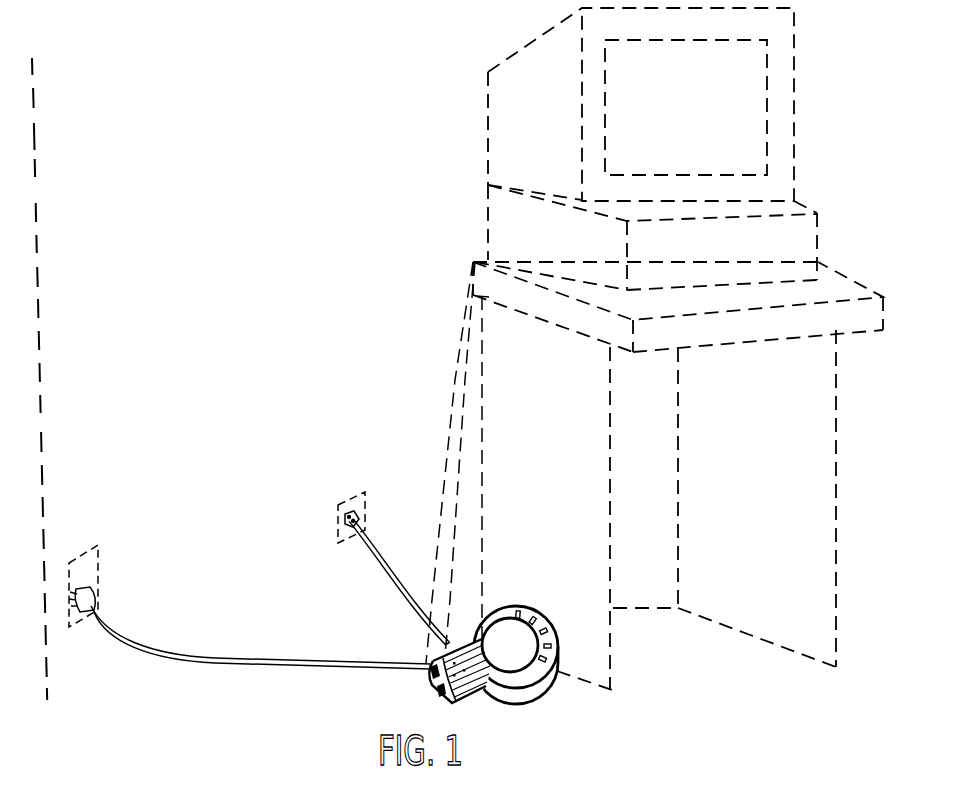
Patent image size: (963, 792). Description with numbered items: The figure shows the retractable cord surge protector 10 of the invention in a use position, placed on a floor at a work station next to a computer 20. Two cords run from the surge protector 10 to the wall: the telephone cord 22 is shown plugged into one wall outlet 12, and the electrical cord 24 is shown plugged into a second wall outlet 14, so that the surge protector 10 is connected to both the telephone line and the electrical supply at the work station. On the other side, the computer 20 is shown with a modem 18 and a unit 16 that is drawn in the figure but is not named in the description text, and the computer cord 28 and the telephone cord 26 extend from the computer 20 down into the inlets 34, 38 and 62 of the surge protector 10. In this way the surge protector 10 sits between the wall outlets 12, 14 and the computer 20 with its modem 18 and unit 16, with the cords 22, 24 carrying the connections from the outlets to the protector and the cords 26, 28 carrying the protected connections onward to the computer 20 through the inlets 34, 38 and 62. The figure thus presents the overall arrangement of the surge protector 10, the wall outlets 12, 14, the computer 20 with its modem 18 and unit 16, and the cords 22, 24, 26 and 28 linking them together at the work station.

The retractable cord surge protector 10 is at (475, 634).
The wall outlet 12 is at (364, 513).
The wall outlet 14 is at (108, 572).
The computer central processing unit 16 is at (481, 222).
The modem 18 is at (487, 212).
The computer 20 is at (550, 141).
The telephone cord 22 is at (396, 588).
The electrical cord 24 is at (328, 666).
The telephone cord 26 is at (465, 390).
The computer cord 28 is at (470, 343).
The inlet 34 is at (455, 645).
The inlet 38 is at (437, 653).
The inlet 62 is at (430, 683).